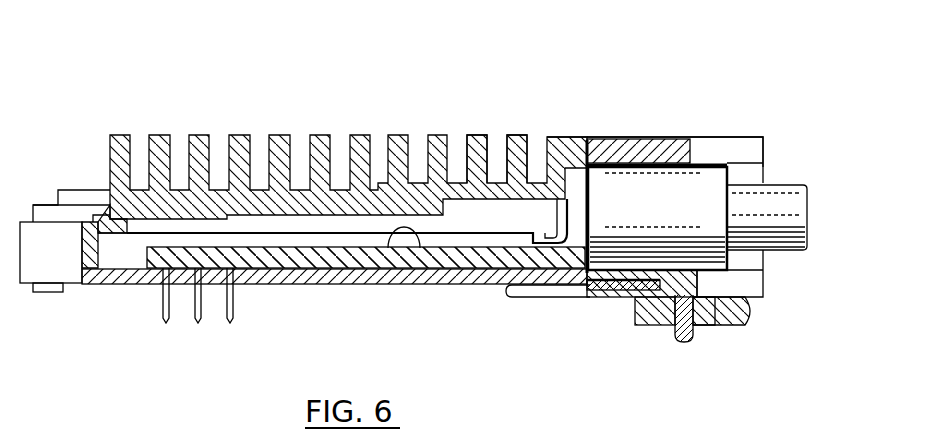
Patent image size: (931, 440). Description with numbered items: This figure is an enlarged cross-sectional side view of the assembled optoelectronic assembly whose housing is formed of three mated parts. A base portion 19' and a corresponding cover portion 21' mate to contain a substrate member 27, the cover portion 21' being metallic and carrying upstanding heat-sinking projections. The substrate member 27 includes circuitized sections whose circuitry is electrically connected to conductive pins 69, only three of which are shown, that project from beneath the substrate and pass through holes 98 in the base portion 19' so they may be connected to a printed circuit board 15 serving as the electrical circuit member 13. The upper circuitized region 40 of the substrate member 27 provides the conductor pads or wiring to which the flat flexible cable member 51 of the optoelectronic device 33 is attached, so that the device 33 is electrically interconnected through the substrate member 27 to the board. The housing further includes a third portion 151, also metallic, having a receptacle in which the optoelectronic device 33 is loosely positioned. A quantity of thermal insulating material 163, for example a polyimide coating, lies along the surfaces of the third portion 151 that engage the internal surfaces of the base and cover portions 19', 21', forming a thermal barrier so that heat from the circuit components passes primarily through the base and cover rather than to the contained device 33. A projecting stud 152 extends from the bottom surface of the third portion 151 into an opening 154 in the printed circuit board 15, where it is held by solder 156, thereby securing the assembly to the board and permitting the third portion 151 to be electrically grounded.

The cover portion 21' is at (332, 169).
The flexible cable member 51 is at (500, 156).
The thermal insulating material 163 is at (650, 140).
The third portion 151 is at (686, 137).
The optoelectronic device 33 is at (667, 204).
The holes 98 is at (231, 278).
The conductive pins 69 is at (230, 323).
The upper circuitized region 40 is at (393, 249).
The base portion 19' is at (334, 296).
The substrate member 27 is at (497, 285).
The electrical circuit member 13 is at (760, 310).
The opening 154 is at (672, 332).
The projecting studs 152 is at (686, 343).
The solder 156 is at (694, 332).
The printed circuit board 15 is at (737, 332).